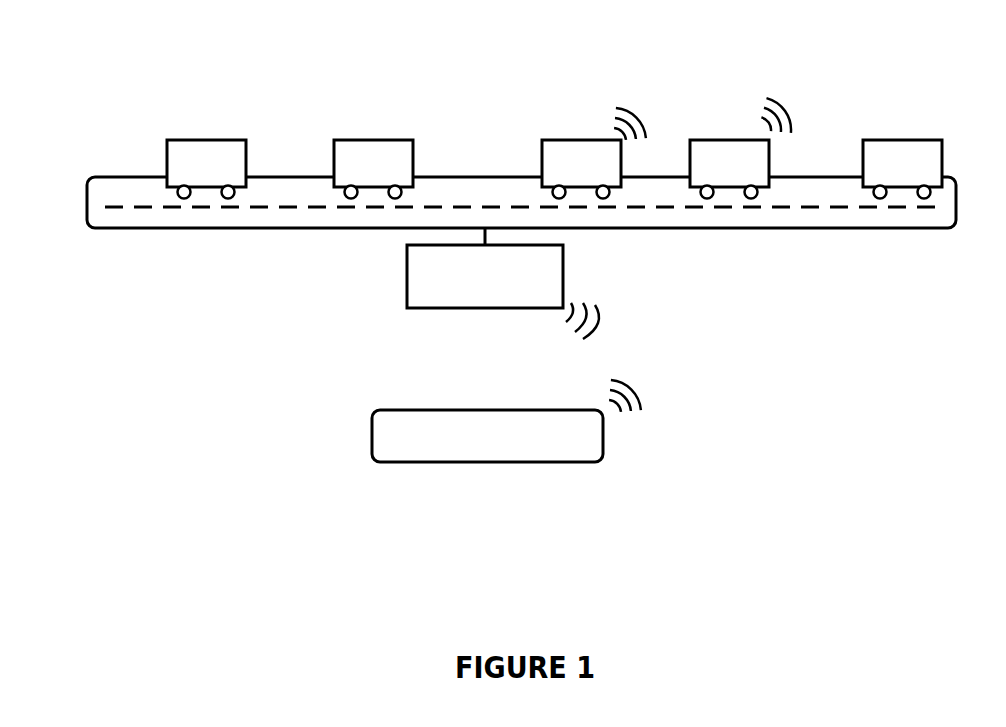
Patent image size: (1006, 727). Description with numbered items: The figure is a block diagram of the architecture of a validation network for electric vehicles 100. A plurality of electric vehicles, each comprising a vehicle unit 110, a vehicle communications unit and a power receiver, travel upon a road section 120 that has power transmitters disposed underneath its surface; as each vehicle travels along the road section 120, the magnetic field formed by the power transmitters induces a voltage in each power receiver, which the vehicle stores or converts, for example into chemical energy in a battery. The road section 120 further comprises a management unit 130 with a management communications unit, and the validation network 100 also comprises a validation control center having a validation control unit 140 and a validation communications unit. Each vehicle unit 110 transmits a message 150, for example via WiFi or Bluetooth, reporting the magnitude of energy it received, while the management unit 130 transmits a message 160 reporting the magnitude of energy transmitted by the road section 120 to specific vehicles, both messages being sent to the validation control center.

The validation network for electric vehicles 100 is at (972, 580).
The vehicle unit 110 is at (167, 160).
The road section 120 is at (87, 207).
The management unit 130 is at (407, 275).
The validation control unit 140 is at (372, 438).
The message 150 is at (649, 130).
The message 160 is at (593, 333).